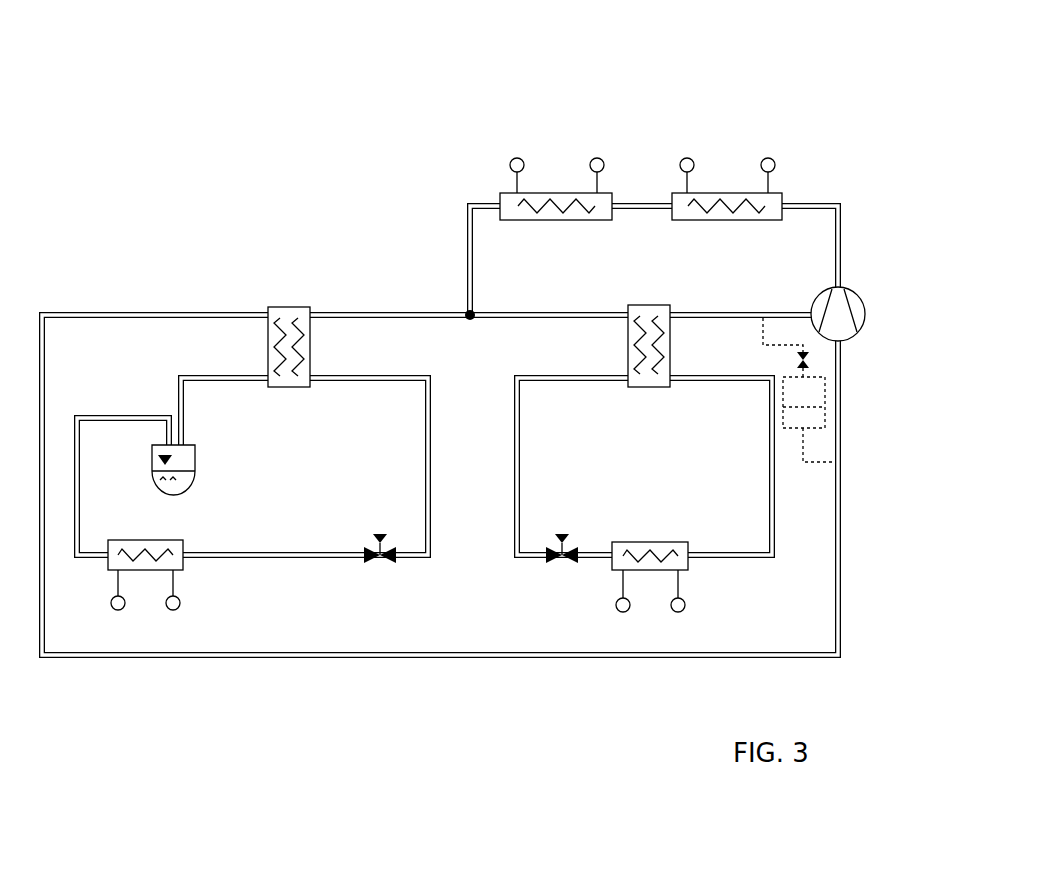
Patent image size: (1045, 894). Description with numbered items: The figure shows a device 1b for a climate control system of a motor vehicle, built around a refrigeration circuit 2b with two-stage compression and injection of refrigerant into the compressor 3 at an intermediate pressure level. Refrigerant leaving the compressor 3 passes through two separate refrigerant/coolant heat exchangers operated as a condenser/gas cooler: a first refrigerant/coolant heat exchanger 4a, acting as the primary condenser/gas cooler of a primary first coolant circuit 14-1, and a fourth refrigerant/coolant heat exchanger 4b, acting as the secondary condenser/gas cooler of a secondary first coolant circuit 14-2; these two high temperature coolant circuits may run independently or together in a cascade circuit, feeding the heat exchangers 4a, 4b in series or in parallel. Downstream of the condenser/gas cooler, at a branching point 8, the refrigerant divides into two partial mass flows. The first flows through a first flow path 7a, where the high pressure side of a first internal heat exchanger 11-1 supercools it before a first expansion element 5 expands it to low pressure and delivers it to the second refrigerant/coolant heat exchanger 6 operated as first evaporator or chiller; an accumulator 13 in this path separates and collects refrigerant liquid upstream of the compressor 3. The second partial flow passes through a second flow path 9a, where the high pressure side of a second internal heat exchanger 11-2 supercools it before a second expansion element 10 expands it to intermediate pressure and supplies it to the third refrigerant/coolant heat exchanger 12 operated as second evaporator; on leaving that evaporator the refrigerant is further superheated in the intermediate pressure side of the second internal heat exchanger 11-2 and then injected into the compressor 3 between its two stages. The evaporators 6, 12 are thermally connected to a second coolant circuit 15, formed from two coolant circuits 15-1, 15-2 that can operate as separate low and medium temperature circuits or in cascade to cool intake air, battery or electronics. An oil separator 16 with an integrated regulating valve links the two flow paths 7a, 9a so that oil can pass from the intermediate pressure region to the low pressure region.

The device 1b is at (841, 128).
The refrigeration circuit 2b is at (857, 240).
The compressor 3 is at (853, 322).
The first refrigerant/coolant heat exchanger 4a is at (716, 198).
The fourth refrigerant/coolant heat exchanger 4b is at (546, 198).
The first expansion element 5 is at (377, 533).
The second refrigerant/coolant heat exchanger 6 is at (176, 548).
The first flow path 7a is at (140, 315).
The branching point 8 is at (466, 311).
The second flow path 9a is at (523, 318).
The second expansion element 10 is at (566, 534).
The first internal heat exchanger 11-1 is at (290, 310).
The second internal heat exchanger 11-2 is at (652, 387).
The third refrigerant/coolant heat exchanger 12 is at (683, 550).
The accumulator 13 is at (188, 456).
The primary first coolant circuit 14-1 is at (689, 158).
The secondary first coolant circuit 14-2 is at (519, 158).
The second coolant circuit 15 is at (469, 572).
The coolant circuit 15-1 is at (181, 608).
The coolant circuit 15-2 is at (686, 609).
The oil separator 16 is at (814, 396).